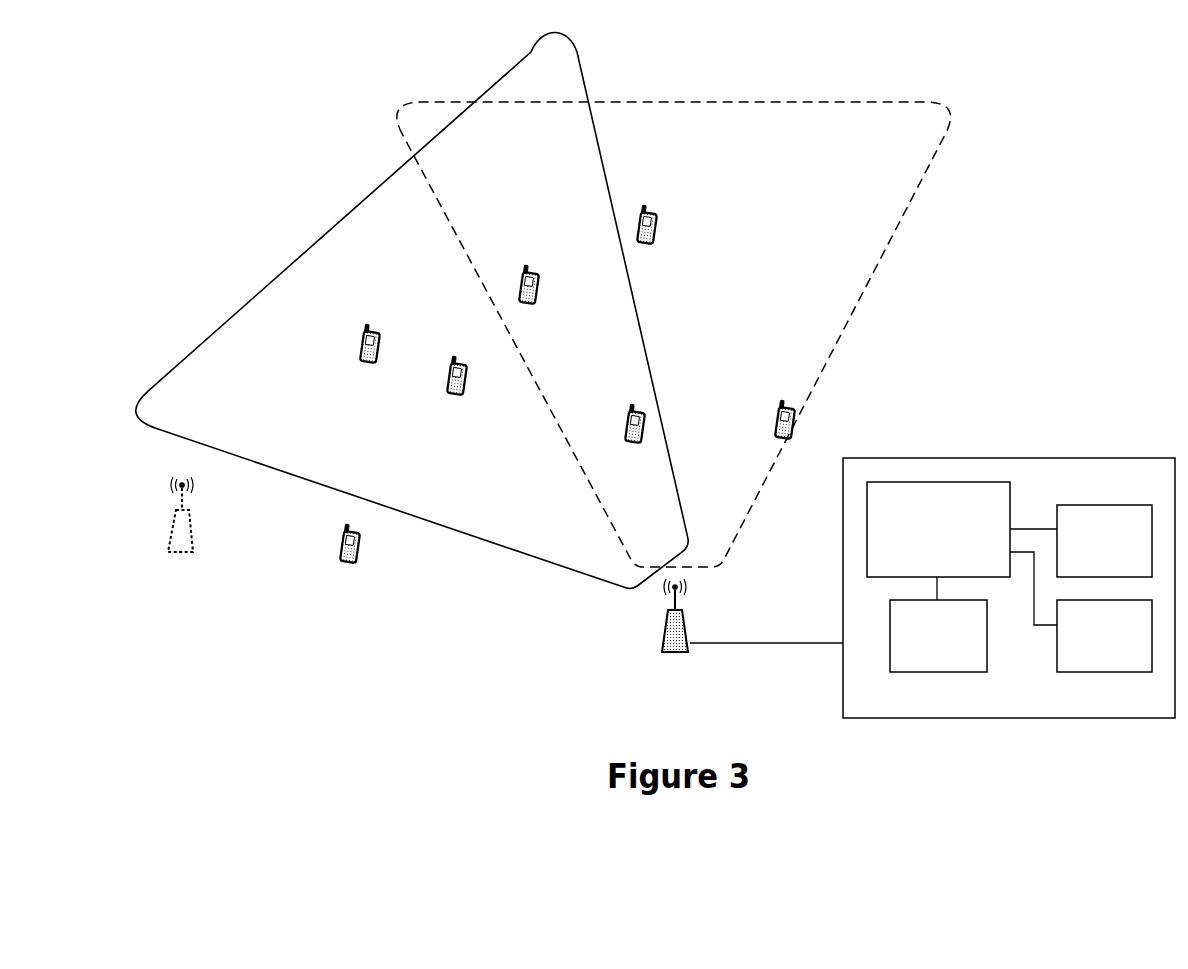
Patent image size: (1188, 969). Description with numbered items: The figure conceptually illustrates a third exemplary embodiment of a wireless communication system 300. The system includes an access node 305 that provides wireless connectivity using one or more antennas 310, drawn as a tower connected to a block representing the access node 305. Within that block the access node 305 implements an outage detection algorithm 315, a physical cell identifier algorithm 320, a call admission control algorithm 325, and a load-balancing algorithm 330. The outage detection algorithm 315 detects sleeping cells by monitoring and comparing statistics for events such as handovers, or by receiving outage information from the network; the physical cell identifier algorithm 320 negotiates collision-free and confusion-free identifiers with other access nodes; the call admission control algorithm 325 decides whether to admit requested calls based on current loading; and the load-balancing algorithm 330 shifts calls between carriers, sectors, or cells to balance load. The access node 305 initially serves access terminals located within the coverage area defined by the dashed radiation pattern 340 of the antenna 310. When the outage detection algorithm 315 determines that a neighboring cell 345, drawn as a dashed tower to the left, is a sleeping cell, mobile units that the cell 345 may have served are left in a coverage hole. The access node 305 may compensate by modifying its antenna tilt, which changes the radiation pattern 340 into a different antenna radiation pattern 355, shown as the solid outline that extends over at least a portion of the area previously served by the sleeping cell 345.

The wireless communication system 300 is at (1082, 102).
The access node 305 is at (1009, 588).
The antenna 310 is at (675, 657).
The outage detection algorithm 315 is at (922, 565).
The physical cell identifier algorithm 320 is at (1087, 566).
The call admission control algorithm 325 is at (1087, 661).
The load-balancing algorithm 330 is at (922, 661).
The radiation pattern 340 is at (775, 102).
The neighboring cell 345 is at (181, 555).
The antenna radiation pattern 355 is at (293, 255).